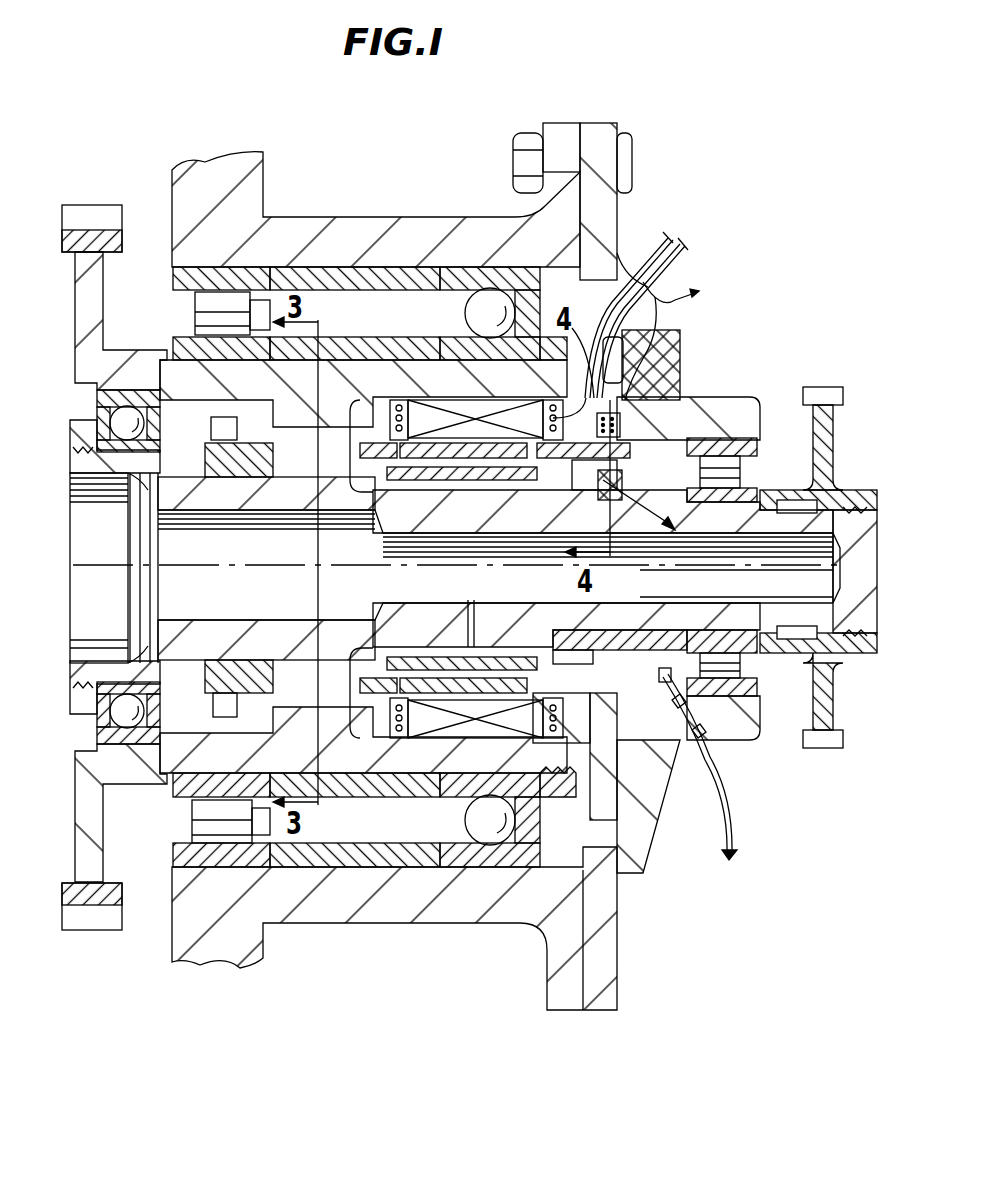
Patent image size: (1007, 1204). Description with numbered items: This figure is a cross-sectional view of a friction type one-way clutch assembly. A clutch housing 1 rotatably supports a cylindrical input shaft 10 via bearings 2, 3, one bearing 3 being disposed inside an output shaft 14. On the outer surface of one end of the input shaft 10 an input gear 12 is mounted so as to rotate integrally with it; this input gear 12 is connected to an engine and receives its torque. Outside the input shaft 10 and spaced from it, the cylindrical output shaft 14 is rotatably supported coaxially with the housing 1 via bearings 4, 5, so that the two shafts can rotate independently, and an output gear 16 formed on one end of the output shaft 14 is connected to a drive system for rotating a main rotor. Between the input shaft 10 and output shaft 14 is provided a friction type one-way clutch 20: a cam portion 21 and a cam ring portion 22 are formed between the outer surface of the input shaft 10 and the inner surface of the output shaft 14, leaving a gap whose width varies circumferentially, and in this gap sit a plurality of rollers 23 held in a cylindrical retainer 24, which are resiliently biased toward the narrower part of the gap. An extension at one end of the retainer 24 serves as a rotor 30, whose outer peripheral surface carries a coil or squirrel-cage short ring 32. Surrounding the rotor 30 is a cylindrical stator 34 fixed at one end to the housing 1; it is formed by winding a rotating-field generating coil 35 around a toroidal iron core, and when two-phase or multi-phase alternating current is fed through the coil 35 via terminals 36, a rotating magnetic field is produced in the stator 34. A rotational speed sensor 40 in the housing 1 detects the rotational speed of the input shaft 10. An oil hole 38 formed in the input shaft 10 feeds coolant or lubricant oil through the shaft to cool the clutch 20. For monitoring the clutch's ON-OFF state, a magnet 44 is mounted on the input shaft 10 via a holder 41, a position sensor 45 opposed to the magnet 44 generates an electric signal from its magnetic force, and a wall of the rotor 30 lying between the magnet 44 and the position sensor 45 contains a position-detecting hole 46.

The clutch housing 1 is at (308, 228).
The bearing 2 is at (760, 680).
The bearing 3 is at (97, 403).
The bearing 4 is at (487, 267).
The bearing 5 is at (205, 267).
The input shaft 10 is at (877, 600).
The input gear 12 is at (838, 440).
The output shaft 14 is at (163, 366).
The output gear 16 is at (100, 203).
The friction type one-way clutch 20 is at (375, 707).
The cam portion 21 is at (285, 640).
The cam ring portion 22 is at (227, 750).
The rollers 23 is at (318, 700).
The retainer 24 is at (237, 695).
The rotor 30 is at (553, 690).
The coil or squirrel-cage short ring 32 is at (535, 705).
The stator 34 is at (667, 287).
The rotating-field generating coil 35 is at (420, 398).
The terminals 36 is at (677, 228).
The oil hole 38 is at (473, 597).
The rotational speed sensor 40 is at (708, 745).
The holder 41 is at (605, 642).
The magnet 44 is at (620, 478).
The position sensor 45 is at (680, 367).
The position-detecting hole 46 is at (690, 397).